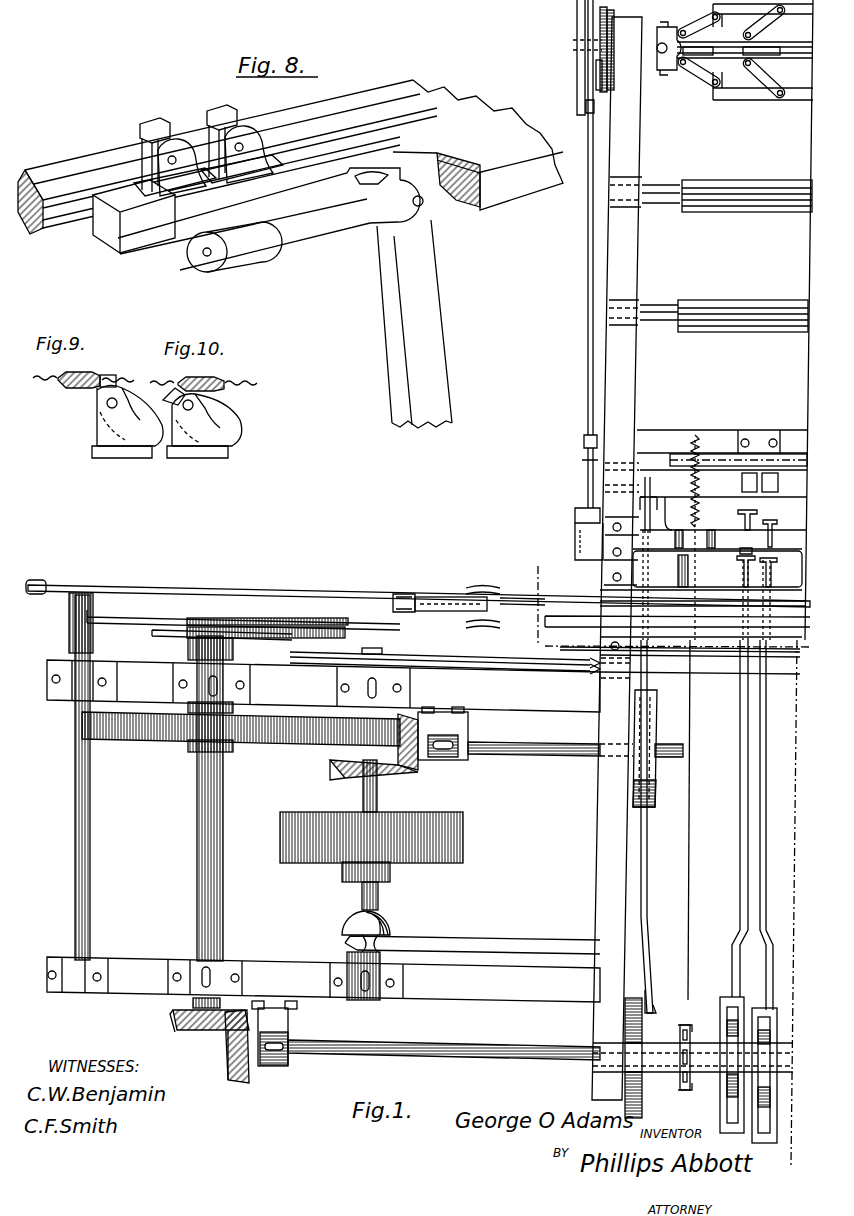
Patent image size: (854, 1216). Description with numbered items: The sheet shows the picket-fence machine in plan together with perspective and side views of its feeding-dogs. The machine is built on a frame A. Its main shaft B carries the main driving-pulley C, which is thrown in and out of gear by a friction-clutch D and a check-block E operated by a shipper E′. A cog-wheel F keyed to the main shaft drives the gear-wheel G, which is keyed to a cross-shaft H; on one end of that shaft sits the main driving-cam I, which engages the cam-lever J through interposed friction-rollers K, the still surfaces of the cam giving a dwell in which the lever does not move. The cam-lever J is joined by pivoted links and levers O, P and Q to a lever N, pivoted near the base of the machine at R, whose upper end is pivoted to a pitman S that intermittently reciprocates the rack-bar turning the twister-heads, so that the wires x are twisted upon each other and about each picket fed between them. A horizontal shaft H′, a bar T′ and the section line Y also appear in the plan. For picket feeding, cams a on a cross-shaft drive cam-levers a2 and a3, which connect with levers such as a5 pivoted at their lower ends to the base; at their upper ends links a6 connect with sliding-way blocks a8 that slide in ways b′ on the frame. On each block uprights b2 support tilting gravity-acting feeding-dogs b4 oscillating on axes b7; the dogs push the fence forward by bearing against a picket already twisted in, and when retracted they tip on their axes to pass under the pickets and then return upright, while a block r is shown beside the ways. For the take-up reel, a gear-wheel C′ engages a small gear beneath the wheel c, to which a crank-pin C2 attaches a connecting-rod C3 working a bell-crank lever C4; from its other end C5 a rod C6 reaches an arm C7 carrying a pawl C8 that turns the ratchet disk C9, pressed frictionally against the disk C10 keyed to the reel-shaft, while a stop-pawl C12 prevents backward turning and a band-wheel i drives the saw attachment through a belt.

In FIG. 1, the frame A is at (617, 558).
In FIG. 1, the main shaft B is at (380, 802).
In FIG. 1, the main driving-pulley C is at (388, 847).
In FIG. 1, the friction-clutch D is at (377, 931).
In FIG. 1, the check-block E is at (362, 900).
In FIG. 1, the shipper E′ is at (472, 931).
In FIG. 1, the cog-wheel F is at (343, 746).
In FIG. 1, the gear-wheel G is at (268, 740).
In FIG. 1, the cross-shaft H is at (224, 886).
In FIG. 1, the horizontal shaft H′ is at (444, 1065).
In FIG. 1, the main driving-cam I is at (267, 611).
In FIG. 1, the cam-lever J is at (186, 637).
In FIG. 1, the friction-rollers K is at (323, 831).
In FIG. 1, the lever N is at (440, 594).
In FIG. 1, the link O is at (156, 636).
In FIG. 1, the link P is at (243, 614).
In FIG. 1, the lever Q is at (418, 591).
In FIG. 1, the pivot R is at (469, 615).
In FIG. 1, the pitman S is at (530, 606).
In FIG. 1, the bar T′ is at (677, 618).
In FIG. 1, the center line Y is at (535, 603).
In FIG. 1, the cam a is at (725, 1094).
In FIG. 1, the cam-lever a2 is at (748, 825).
In FIG. 8, the cam-lever a3 is at (134, 216).
In FIG. 8, the lever a5 is at (414, 324).
In FIG. 8, the link a6 is at (270, 219).
In FIG. 1, the sliding-way block a8 is at (752, 528).
In FIG. 8, the ways b′ is at (445, 165).
In FIG. 1, the ways b′ is at (745, 483).
In FIG. 8, the upright b2 is at (215, 161).
In FIG. 9, the upright b2 is at (118, 415).
In FIG. 10, the upright b2 is at (196, 420).
In FIG. 8, the feeding-dog b4 is at (165, 132).
In FIG. 9, the feeding-dog b4 is at (127, 423).
In FIG. 10, the feeding-dog b4 is at (205, 426).
In FIG. 1, the feeding-dog b4 is at (768, 567).
In FIG. 8, the axis b7 is at (176, 160).
In FIG. 9, the axis b7 is at (108, 404).
In FIG. 10, the axis b7 is at (183, 405).
In FIG. 1, the wheel c is at (640, 1108).
In FIG. 1, the gear-wheel C′ is at (633, 1026).
In FIG. 1, the crank-pin C2 is at (613, 553).
In FIG. 1, the connecting-rod C3 is at (655, 826).
In FIG. 1, the bell-crank lever C4 is at (656, 504).
In FIG. 1, the end of bell-crank lever C5 is at (586, 456).
In FIG. 1, the rod C6 is at (586, 412).
In FIG. 1, the arm C7 is at (597, 78).
In FIG. 1, the pawl C8 is at (605, 95).
In FIG. 1, the ratchet wheel or disk C9 is at (601, 50).
In FIG. 1, the disk C10 is at (608, 12).
In FIG. 1, the stop-pawl C12 is at (608, 63).
In FIG. 1, the band-wheel i is at (575, 748).
In FIG. 1, the block r is at (678, 570).
In FIG. 1, the wires x is at (746, 908).